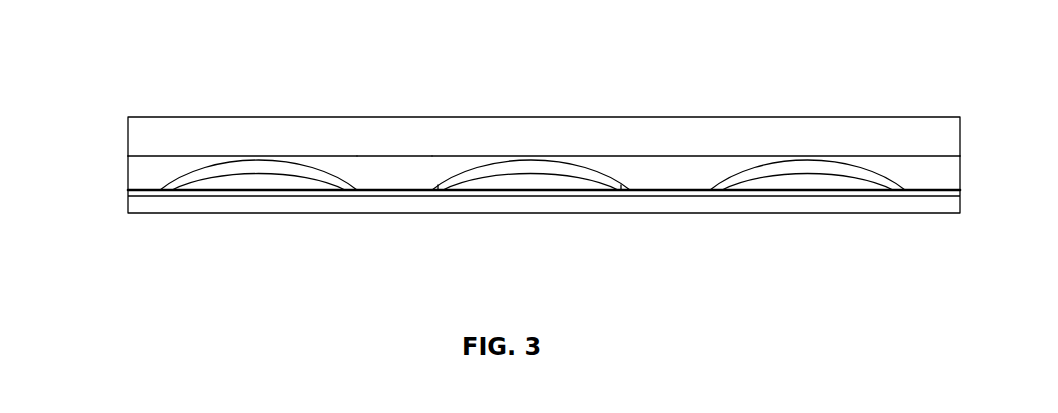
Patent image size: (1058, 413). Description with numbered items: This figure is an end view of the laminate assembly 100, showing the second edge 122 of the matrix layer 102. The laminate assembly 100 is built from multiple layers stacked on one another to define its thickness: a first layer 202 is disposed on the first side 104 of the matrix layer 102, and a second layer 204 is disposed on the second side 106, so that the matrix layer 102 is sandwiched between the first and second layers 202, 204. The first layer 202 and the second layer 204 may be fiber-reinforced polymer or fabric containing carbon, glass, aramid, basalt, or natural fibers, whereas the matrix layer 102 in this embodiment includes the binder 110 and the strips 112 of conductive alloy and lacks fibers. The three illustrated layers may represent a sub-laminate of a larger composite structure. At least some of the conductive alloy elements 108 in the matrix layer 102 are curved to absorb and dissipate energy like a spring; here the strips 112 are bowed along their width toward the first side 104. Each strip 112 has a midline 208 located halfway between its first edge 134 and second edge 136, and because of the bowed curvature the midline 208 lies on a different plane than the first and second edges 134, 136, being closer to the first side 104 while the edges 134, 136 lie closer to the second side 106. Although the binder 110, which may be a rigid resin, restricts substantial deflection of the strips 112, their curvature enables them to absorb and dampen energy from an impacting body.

The laminate assembly 100 is at (180, 43).
The matrix layer 102 is at (128, 170).
The first side 104 is at (648, 156).
The second side 106 is at (677, 190).
The conductive alloy elements 108 is at (215, 163).
The binder 110 is at (397, 168).
The strips of conductive alloy 112 is at (283, 163).
The second edge 122 is at (377, 177).
The first edge 134 is at (440, 188).
The second edge 136 is at (618, 189).
The first layer 202 is at (128, 135).
The second layer 204 is at (128, 198).
The midline 208 is at (530, 167).